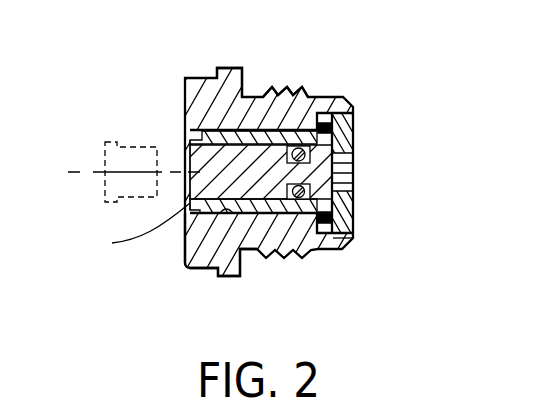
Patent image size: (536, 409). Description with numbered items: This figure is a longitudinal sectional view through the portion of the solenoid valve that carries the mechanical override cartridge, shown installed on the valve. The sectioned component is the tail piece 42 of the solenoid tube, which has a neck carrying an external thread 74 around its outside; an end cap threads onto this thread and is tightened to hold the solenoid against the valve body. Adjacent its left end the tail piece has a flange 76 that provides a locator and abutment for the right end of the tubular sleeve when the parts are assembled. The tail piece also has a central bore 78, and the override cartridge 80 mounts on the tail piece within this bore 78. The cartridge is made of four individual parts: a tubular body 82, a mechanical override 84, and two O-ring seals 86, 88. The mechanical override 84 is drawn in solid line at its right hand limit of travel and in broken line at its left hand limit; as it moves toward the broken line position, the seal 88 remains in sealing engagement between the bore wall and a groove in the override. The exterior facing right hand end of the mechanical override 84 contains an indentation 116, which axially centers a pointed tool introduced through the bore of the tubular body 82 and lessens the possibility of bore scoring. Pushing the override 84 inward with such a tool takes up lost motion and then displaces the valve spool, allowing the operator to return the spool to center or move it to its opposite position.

The tail piece 42 is at (187, 77).
The flange 76 is at (238, 67).
The thread 74 is at (272, 90).
The override cartridge 80 is at (355, 131).
The indentation 116 is at (333, 173).
The tubular body 82 is at (332, 218).
The O-ring seal 86 is at (355, 229).
The O-ring seal 88 is at (297, 200).
The central bore 78 is at (186, 247).
The mechanical override 84 is at (138, 203).